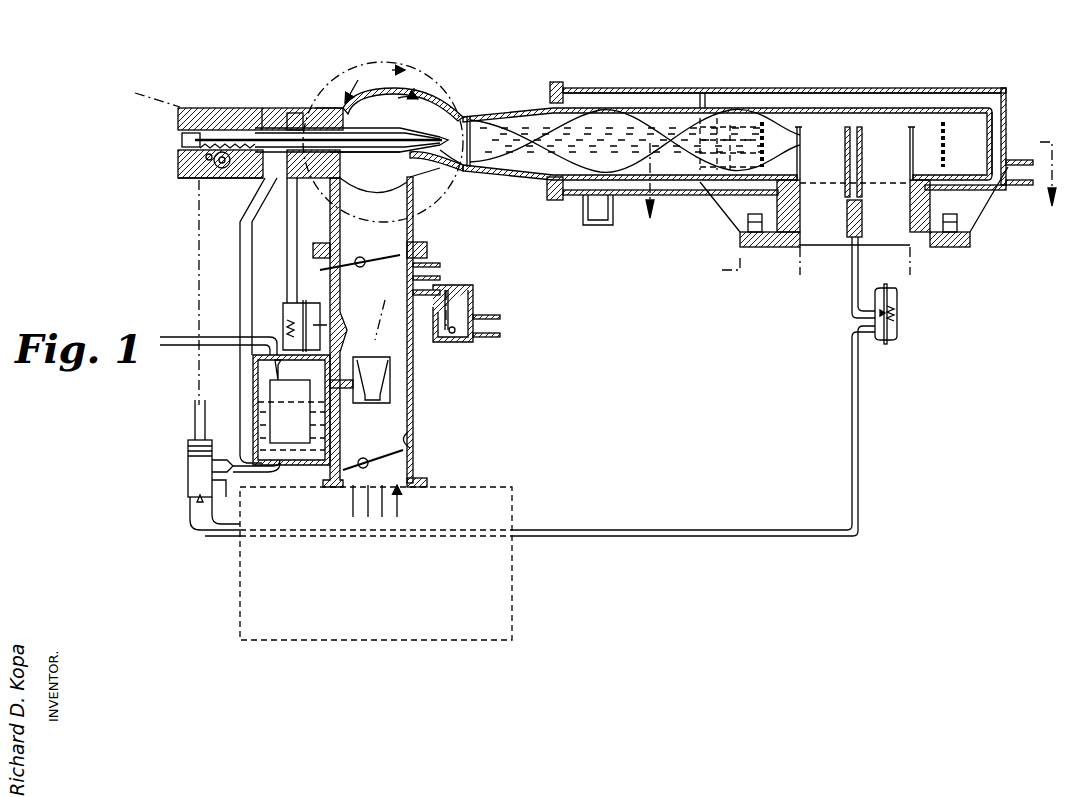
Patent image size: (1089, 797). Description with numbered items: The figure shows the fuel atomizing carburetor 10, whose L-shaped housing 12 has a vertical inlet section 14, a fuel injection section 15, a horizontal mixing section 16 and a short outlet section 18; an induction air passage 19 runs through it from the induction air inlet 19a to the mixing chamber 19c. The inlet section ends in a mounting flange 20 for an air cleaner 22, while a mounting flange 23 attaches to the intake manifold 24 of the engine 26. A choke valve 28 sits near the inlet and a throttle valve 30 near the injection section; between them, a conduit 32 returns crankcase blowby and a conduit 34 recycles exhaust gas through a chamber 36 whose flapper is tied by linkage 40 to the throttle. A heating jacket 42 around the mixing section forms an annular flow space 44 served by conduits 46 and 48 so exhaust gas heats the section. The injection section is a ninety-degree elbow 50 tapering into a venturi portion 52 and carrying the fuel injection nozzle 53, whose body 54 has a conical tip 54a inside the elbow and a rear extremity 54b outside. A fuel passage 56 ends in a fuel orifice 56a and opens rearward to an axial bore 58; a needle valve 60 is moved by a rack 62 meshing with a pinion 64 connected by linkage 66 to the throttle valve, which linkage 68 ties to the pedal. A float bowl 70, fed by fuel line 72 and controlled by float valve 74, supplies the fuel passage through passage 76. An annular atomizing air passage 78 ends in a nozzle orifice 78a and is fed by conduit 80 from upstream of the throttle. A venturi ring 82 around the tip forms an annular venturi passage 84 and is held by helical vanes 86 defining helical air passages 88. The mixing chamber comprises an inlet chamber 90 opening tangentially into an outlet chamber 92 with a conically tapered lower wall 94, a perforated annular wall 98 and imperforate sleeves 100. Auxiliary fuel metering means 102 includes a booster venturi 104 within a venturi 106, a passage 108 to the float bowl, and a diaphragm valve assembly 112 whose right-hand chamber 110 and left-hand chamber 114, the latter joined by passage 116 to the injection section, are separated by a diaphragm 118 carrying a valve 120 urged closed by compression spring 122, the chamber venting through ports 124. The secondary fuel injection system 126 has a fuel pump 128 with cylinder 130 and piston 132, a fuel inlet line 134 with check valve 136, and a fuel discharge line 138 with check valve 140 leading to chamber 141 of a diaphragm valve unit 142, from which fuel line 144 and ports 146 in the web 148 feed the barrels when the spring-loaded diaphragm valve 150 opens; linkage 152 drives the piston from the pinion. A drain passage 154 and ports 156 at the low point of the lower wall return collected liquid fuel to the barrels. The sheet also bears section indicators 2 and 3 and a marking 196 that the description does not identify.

The fuel atomizing carburetor 10 is at (552, 47).
The housing 12 is at (550, 88).
The inlet section 14 is at (417, 405).
The fuel injection section 15 is at (414, 85).
The mixing section 16 is at (718, 100).
The outlet section 18 is at (974, 236).
The induction air passage 19 is at (412, 440).
The induction air inlet 19a is at (345, 492).
The mixing chamber 19c is at (630, 135).
The mounting flange 20 is at (422, 484).
The air cleaner 22 is at (515, 492).
The mounting flange 23 is at (972, 242).
The intake manifold 24 is at (738, 258).
The internal combustion engine 26 is at (716, 286).
The choke valve 28 is at (405, 462).
The throttle valve 30 is at (428, 248).
The conduit 32 is at (445, 272).
The conduit 34 is at (502, 325).
The chamber 36 is at (471, 287).
The linkage 40 is at (411, 317).
The heating jacket 42 is at (810, 88).
The annular flow space 44 is at (890, 105).
The conduit 46 is at (598, 226).
The conduit 48 is at (1036, 160).
The elbow 50 is at (466, 98).
The venturi portion 52 is at (446, 168).
The fuel injection nozzle 53 is at (315, 106).
The nozzle body 54 is at (300, 112).
The conical tip 54a is at (405, 165).
The rear extremity 54b is at (260, 110).
The fuel passage 56 is at (425, 125).
The fuel orifice 56a is at (458, 165).
The axial bore 58 is at (318, 96).
The needle valve 60 is at (226, 168).
The rack 62 is at (182, 140).
The pinion 64 is at (180, 186).
The linkage 66 is at (306, 190).
The linkage 68 is at (160, 96).
The float bowl 70 is at (255, 392).
The fuel line 72 is at (172, 348).
The float valve 74 is at (265, 370).
The passage 76 is at (240, 266).
The atomizing air passage 78 is at (412, 147).
The nozzle orifice 78a is at (446, 131).
The conduit 80 is at (262, 190).
The venturi ring 82 is at (413, 200).
The annular venturi passage 84 is at (430, 93).
The vanes 86 is at (489, 115).
The helical air passages 88 is at (420, 182).
The inlet chamber 90 is at (595, 165).
The outlet chamber 92 is at (975, 128).
The lower wall 94 is at (918, 247).
The perforated annular wall 98 is at (950, 115).
The imperforate sleeves 100 is at (796, 146).
The auxiliary fuel metering means 102 is at (393, 388).
The booster venturi 104 is at (362, 402).
The venturi 106 is at (372, 346).
The passage 108 is at (312, 405).
The right-hand chamber 110 is at (320, 310).
The diaphragm valve assembly 112 is at (300, 305).
The left-hand chamber 114 is at (288, 330).
The passage 116 is at (240, 234).
The flexible diaphragm 118 is at (296, 372).
The diaphragm valve 120 is at (275, 347).
The compression spring 122 is at (290, 318).
The ports 124 is at (320, 321).
The secondary fuel injection system 126 is at (630, 530).
The fuel pump 128 is at (192, 498).
The cylinder 130 is at (188, 467).
The piston 132 is at (195, 418).
The fuel inlet line 134 is at (260, 475).
The check valve 136 is at (230, 466).
The fuel discharge line 138 is at (710, 530).
The check valve 140 is at (196, 513).
The chamber 141 is at (862, 335).
The diaphragm valve unit 142 is at (900, 324).
The fuel line 144 is at (858, 270).
The ports 146 is at (849, 225).
The web 148 is at (863, 205).
The diaphragm valve 150 is at (890, 300).
The linkage 152 is at (198, 212).
The passage 154 is at (858, 137).
The ports 156 is at (849, 193).
The passages 196 is at (854, 250).
The section line 2 is at (850, 193).
The section line 3 is at (383, 139).